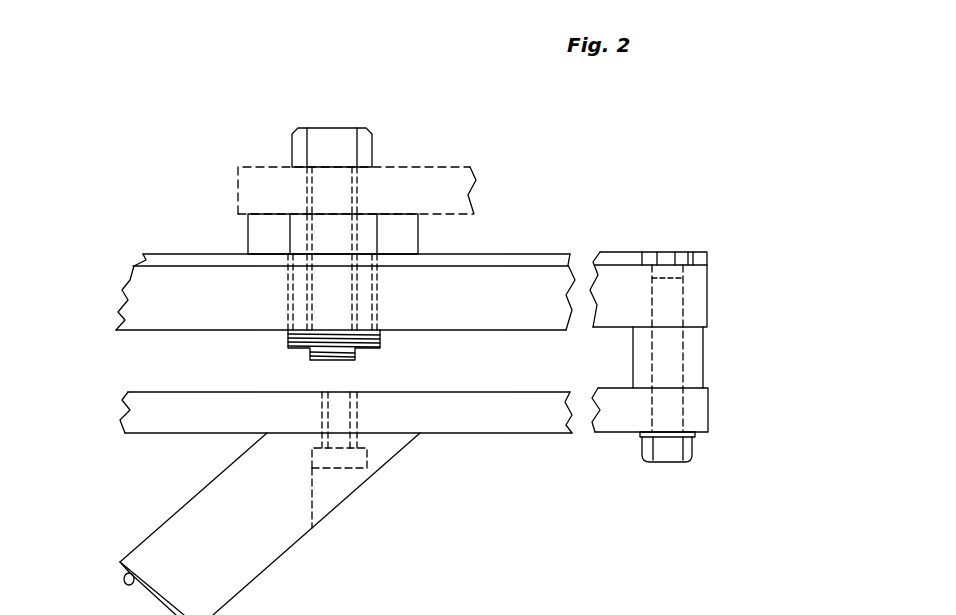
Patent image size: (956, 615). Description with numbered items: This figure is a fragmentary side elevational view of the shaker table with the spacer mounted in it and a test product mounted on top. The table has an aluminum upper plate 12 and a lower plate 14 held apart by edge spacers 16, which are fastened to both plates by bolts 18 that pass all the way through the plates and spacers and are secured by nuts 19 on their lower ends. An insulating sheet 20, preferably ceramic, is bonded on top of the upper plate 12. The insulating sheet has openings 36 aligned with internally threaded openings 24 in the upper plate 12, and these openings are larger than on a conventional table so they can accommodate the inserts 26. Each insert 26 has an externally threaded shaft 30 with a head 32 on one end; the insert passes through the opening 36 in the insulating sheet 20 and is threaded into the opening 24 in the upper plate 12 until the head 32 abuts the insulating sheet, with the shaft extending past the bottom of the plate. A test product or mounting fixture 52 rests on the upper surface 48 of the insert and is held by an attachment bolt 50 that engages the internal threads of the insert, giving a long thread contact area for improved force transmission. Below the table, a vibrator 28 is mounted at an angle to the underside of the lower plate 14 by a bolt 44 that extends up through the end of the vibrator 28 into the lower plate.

The upper plate 12 is at (140, 325).
The lower plate 14 is at (150, 412).
The edge spacers 16 is at (705, 353).
The bolts 18 is at (673, 290).
The nuts 19 is at (693, 447).
The insulating sheet 20 is at (570, 252).
The openings 24 is at (385, 297).
The inserts 26 is at (226, 238).
The vibrators 28 is at (297, 510).
The externally threaded shaft 30 is at (297, 297).
The head 32 is at (270, 232).
The openings 36 is at (418, 254).
The bolts 44 is at (348, 463).
The upper surface 48 is at (294, 212).
The attachment bolts 50 is at (345, 148).
The test product or mounting fixture 52 is at (476, 167).